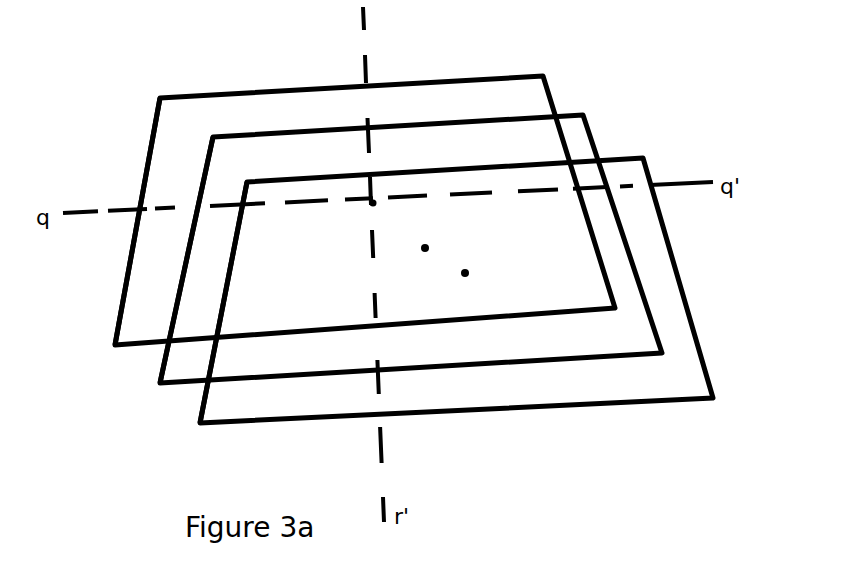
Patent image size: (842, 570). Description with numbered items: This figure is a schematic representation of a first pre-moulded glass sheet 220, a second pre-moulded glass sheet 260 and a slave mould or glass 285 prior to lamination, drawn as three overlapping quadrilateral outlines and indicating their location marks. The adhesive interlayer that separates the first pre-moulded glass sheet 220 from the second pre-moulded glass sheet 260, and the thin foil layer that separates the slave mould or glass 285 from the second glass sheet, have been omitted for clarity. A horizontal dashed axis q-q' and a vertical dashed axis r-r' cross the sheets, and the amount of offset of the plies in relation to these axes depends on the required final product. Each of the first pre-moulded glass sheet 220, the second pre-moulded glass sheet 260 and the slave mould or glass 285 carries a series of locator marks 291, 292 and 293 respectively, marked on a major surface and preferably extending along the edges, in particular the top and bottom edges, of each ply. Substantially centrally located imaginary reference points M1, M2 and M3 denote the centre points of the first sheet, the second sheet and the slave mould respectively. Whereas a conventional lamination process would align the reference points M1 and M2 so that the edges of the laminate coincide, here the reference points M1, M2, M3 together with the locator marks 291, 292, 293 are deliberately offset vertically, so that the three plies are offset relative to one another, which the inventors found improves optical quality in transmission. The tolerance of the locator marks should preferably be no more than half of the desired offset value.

The first pre-moulded glass sheet 220 is at (514, 72).
The second pre-moulded glass sheet 260 is at (594, 136).
The slave mould or glass 285 is at (688, 297).
The locator marks 291 is at (150, 134).
The locator marks 292 is at (201, 186).
The locator marks 293 is at (244, 186).
The imaginary reference point M1 is at (378, 207).
The imaginary reference point M2 is at (432, 246).
The imaginary reference point M3 is at (475, 277).